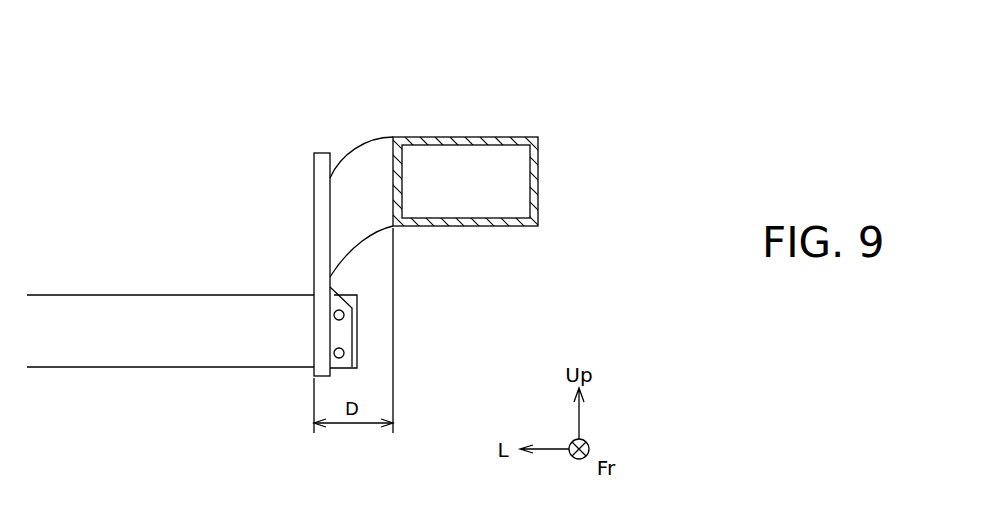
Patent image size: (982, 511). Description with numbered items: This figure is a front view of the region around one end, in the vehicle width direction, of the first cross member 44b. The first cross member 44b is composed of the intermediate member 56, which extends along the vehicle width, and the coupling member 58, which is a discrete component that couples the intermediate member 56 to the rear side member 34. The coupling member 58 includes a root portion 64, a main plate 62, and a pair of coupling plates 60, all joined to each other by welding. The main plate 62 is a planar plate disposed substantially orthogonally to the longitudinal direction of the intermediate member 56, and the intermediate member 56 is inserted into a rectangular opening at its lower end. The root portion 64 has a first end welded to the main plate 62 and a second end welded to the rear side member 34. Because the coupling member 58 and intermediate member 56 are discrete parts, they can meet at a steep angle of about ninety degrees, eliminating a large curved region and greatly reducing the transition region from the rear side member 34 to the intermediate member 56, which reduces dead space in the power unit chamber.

The rear side member 34 is at (510, 133).
The first cross member 44b is at (175, 96).
The intermediate member 56 is at (135, 308).
The coupling member 58 is at (340, 135).
The coupling plate 60 is at (347, 335).
The main plate 62 is at (320, 178).
The root portion 64 is at (371, 147).